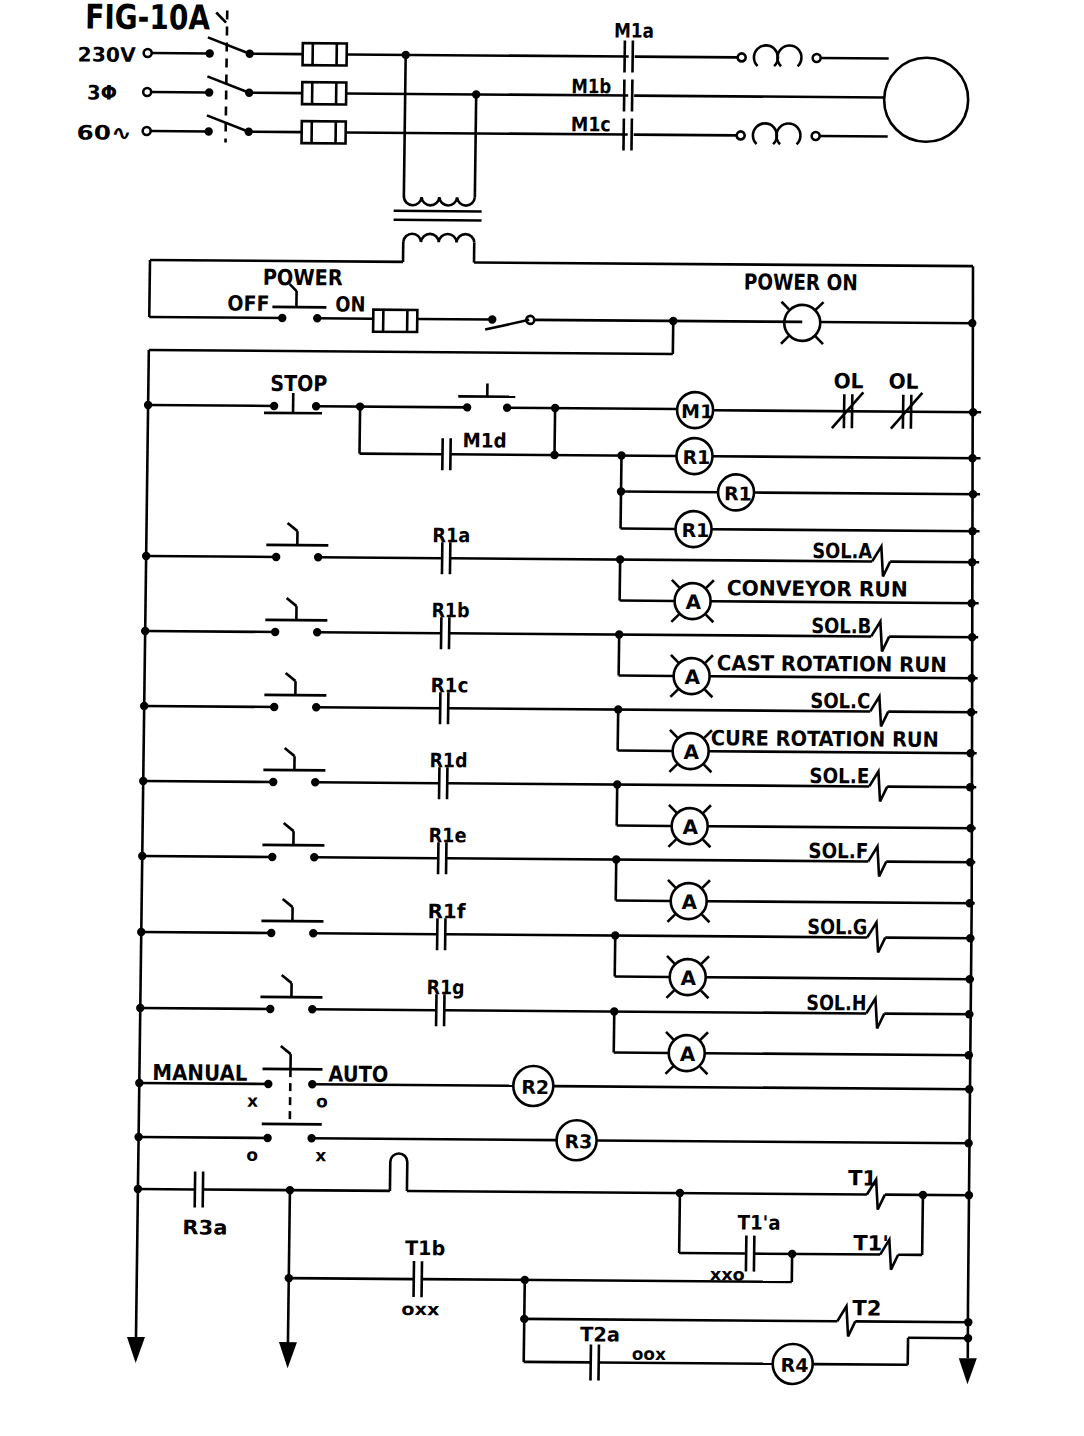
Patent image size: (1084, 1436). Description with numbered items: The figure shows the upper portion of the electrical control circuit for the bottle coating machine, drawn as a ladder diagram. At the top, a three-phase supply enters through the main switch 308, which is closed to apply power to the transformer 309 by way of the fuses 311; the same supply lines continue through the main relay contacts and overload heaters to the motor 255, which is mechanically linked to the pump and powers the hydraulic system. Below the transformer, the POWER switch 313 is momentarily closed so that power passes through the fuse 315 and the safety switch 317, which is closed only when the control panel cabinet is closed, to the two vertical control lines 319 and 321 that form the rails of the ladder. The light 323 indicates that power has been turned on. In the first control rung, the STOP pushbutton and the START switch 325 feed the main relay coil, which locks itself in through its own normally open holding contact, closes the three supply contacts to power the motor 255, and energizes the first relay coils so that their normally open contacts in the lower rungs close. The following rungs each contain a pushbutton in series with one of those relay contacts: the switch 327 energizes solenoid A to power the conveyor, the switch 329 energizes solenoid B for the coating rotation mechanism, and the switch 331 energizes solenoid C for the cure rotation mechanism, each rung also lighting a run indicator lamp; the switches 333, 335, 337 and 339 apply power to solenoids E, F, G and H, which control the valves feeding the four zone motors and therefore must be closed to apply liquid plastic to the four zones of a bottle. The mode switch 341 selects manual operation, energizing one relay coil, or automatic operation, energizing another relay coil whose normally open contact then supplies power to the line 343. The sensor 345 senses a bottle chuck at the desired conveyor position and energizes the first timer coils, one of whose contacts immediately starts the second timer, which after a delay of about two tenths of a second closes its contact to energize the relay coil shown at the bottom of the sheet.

The switch 308 is at (235, 38).
The fuses 311 is at (336, 43).
The transformer 309 is at (483, 216).
The motor 255 is at (924, 136).
The POWER switch 313 is at (291, 311).
The fuse 315 is at (413, 307).
The safety switch 317 is at (512, 314).
The light 323 is at (824, 315).
The line 321 is at (972, 353).
The line 319 is at (150, 480).
The START switch 325 is at (512, 400).
The switch 327 is at (330, 544).
The switch 329 is at (333, 622).
The switch 331 is at (323, 690).
The switch 333 is at (335, 772).
The switch 335 is at (335, 847).
The switch 337 is at (334, 923).
The switch 339 is at (334, 1000).
The mode switch 341 is at (306, 1057).
The sensor 345 is at (413, 1153).
The line 343 is at (304, 1231).